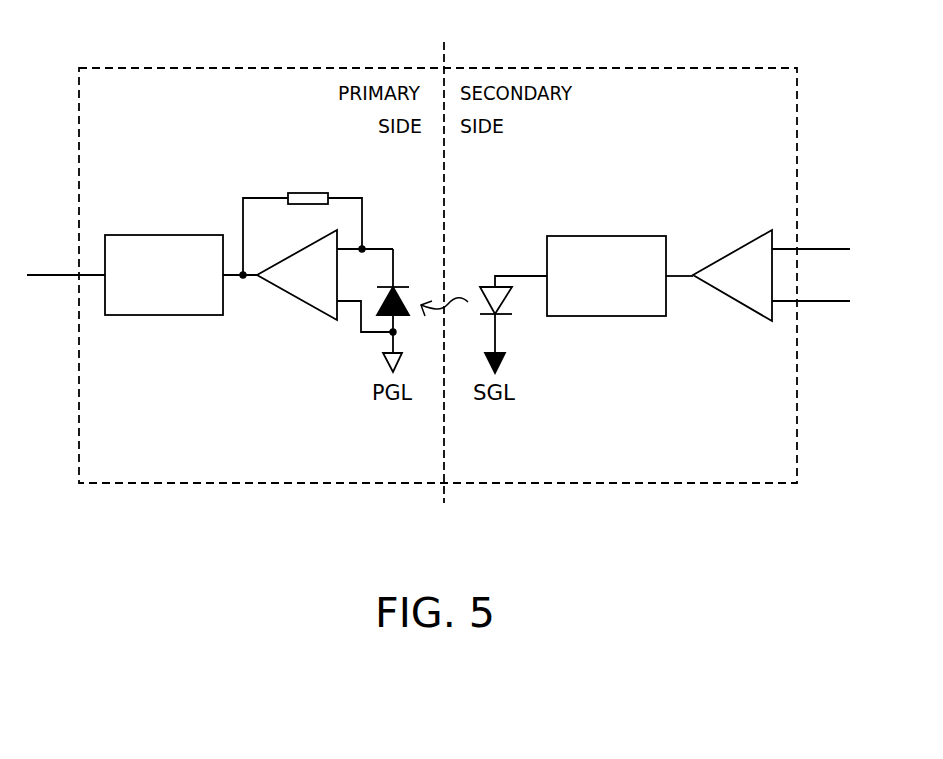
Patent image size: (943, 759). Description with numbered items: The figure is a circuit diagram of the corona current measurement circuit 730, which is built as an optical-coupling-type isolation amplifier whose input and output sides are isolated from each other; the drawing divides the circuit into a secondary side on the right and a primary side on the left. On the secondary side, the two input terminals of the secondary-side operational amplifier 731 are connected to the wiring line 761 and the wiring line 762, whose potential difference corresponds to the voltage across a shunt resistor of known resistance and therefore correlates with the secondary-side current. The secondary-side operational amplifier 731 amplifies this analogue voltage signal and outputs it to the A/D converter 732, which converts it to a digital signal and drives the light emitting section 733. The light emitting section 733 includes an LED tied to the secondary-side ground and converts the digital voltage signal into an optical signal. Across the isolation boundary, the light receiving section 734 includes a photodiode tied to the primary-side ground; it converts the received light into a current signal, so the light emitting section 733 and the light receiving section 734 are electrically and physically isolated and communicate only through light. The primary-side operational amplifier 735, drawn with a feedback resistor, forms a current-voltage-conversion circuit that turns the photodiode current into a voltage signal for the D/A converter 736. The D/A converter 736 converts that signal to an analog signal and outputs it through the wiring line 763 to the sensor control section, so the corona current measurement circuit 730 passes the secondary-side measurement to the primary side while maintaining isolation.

The corona current measurement circuit 730 is at (715, 67).
The secondary-side operational amplifier 731 is at (738, 248).
The A/D converter 732 is at (610, 236).
The light emitting section 733 is at (512, 297).
The light receiving section 734 is at (408, 303).
The primary-side operational amplifier 735 is at (285, 295).
The D/A converter 736 is at (167, 235).
The wiring line 761 is at (823, 248).
The wiring line 762 is at (830, 303).
The wiring line 763 is at (50, 273).